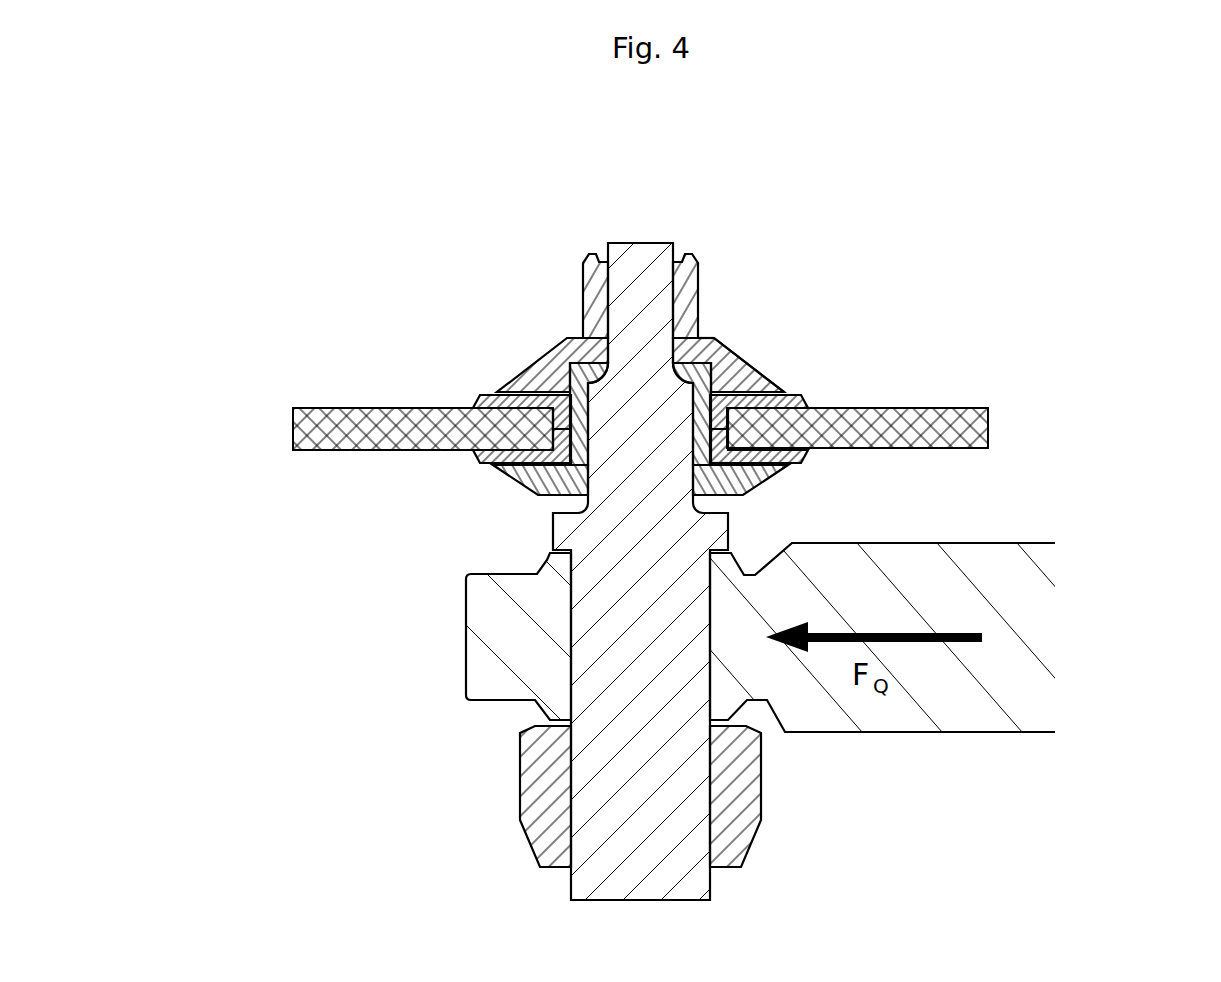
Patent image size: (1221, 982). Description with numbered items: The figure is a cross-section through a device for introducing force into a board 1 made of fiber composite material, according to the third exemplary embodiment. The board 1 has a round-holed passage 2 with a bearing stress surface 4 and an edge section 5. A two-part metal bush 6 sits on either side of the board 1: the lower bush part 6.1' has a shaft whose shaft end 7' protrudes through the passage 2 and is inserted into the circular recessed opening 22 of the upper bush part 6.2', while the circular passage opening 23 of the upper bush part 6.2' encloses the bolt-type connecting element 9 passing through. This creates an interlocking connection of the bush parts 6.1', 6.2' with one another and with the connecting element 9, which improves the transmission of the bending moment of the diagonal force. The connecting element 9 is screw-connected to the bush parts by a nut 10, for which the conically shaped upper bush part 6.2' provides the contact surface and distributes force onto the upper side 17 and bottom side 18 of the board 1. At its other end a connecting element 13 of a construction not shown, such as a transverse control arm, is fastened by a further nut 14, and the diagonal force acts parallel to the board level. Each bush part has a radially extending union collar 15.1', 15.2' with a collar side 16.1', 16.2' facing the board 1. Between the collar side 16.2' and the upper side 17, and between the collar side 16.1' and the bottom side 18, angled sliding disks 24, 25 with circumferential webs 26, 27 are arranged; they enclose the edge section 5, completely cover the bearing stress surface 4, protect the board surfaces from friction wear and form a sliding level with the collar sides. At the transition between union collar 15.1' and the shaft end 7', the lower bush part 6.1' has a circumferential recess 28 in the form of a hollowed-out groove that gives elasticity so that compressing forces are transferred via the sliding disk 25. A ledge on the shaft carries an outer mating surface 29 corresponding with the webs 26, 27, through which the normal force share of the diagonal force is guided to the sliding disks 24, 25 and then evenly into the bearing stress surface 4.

The board 1 is at (423, 410).
The passage 2 is at (950, 426).
The bearing stress surface 4 is at (730, 418).
The edge section 5 is at (502, 390).
The bush 6 is at (372, 399).
The lower bush part 6.1' is at (362, 574).
The upper bush part 6.2' is at (372, 253).
The shaft end 7' is at (925, 266).
The connecting element 9 is at (647, 562).
The nut 10 is at (594, 297).
The connecting element 13 is at (493, 656).
The nut 14 is at (542, 802).
The union collar 15.1' is at (947, 579).
The union collar 15.2' is at (951, 303).
The collar side 16.1' is at (955, 526).
The collar side 16.2' is at (953, 331).
The upper side 17 is at (947, 408).
The bottom side 18 is at (940, 448).
The recessed opening 22 is at (570, 376).
The passage opening 23 is at (677, 348).
The angled sliding disk 24 is at (547, 412).
The angled sliding disk 25 is at (485, 457).
The circumferential web 26 is at (563, 418).
The circumferential web 27 is at (557, 437).
The circumferential recess 28 is at (713, 463).
The outer mating surface 29 is at (718, 442).